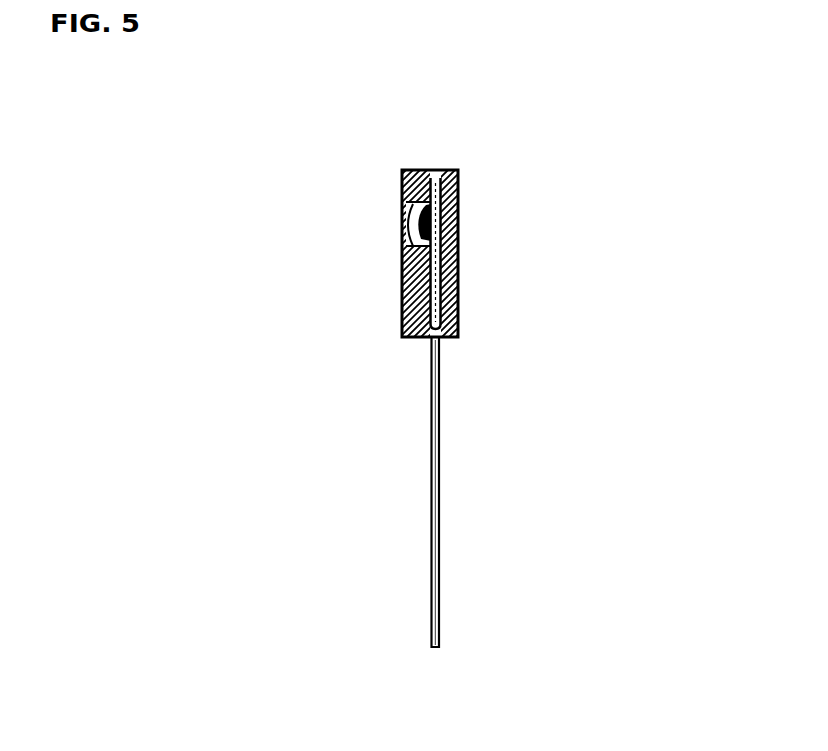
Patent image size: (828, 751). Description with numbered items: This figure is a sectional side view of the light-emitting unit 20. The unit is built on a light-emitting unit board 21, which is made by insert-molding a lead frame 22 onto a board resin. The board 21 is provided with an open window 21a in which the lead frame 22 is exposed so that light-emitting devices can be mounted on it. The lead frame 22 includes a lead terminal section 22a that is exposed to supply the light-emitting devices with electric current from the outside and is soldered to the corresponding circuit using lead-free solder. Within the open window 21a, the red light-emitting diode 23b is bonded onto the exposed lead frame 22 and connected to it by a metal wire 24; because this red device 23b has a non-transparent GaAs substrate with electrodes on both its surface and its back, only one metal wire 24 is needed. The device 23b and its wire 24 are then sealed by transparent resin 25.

The light-emitting unit 20 is at (431, 366).
The light-emitting unit board 21 is at (418, 170).
The open window 21a is at (405, 240).
The lead frame 22 is at (430, 419).
The lead terminal section 22a is at (430, 506).
The red light-emitting diode 23b is at (452, 210).
The metal wire 24 is at (458, 235).
The transparent resin 25 is at (410, 212).